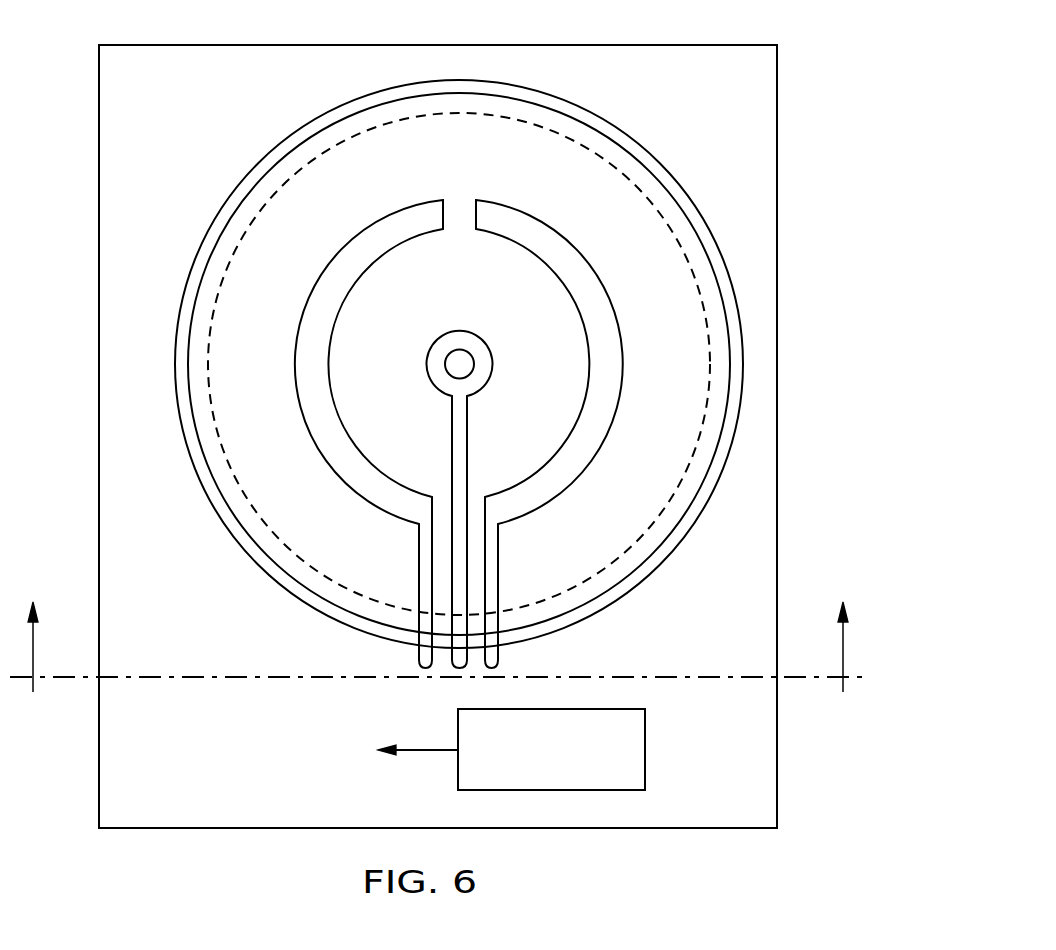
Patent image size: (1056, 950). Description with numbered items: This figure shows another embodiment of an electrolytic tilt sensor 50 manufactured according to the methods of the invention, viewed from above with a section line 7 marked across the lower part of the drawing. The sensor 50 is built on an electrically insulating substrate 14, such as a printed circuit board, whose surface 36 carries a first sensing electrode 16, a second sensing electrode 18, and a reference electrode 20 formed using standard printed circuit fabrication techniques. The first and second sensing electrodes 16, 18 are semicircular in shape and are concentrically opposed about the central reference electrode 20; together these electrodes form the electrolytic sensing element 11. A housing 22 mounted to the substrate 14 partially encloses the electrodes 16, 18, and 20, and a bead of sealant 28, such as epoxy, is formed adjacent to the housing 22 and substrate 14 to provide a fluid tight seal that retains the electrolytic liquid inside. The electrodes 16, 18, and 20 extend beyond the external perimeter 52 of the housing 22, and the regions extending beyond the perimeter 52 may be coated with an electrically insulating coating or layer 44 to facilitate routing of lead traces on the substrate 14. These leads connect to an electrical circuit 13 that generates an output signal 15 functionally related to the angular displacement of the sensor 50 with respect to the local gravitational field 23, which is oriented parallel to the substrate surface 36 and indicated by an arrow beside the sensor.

The section line 7- 7 is at (436, 633).
The electrolytic sensing element 11 is at (727, 247).
The electrical circuit 13 is at (645, 750).
The electrically insulating substrate 14 is at (777, 142).
The output signal 15 is at (418, 752).
The first sensing electrode 16 is at (293, 364).
The second sensing electrode 18 is at (624, 363).
The reference electrode 20 is at (492, 363).
The housing 22 is at (600, 129).
The gravitational field 23 is at (897, 345).
The bead of sealant 28 is at (282, 588).
The surface 36 is at (223, 99).
The electrically insulating coating 44 is at (492, 668).
The electrolytic tilt sensor 50 is at (860, 77).
The external perimeter 52 is at (193, 452).